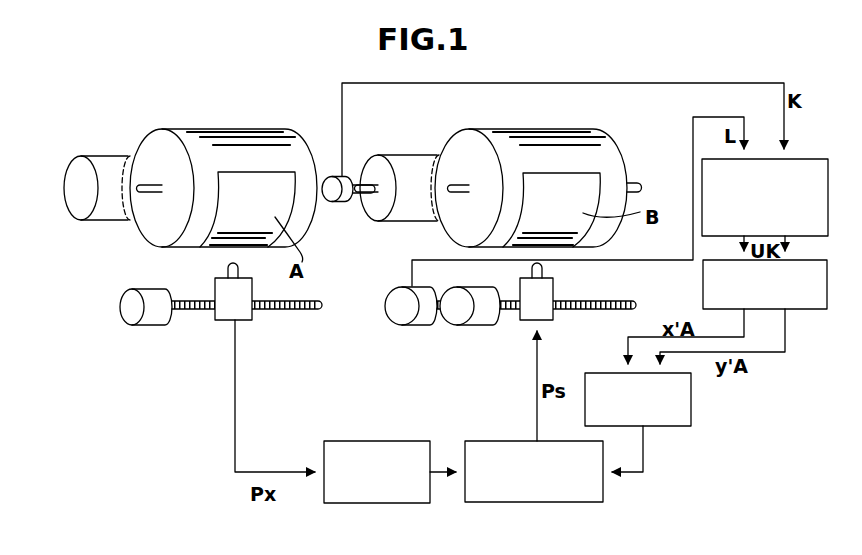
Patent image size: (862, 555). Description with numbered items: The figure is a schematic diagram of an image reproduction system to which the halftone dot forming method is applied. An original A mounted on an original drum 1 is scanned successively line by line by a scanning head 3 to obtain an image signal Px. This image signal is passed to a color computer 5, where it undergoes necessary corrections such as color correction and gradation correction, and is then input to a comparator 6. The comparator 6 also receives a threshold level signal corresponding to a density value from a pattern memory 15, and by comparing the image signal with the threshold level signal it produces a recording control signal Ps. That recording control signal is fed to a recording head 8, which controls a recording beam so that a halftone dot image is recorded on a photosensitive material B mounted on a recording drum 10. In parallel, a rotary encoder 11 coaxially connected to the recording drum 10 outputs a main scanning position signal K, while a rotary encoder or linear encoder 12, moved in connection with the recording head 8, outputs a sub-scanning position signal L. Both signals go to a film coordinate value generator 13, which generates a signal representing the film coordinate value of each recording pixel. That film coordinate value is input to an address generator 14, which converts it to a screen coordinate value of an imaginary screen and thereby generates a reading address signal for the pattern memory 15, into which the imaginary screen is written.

The original drum 1 is at (187, 131).
The scanning head 3 is at (243, 314).
The color computer 5 is at (403, 503).
The comparator 6 is at (575, 503).
The recording head 8 is at (527, 312).
The recording drum 10 is at (611, 152).
The rotary encoder 11 is at (343, 203).
The rotary encoder (or linear encoder) 12 is at (388, 308).
The film coordinate value generator 13 is at (815, 159).
The address generator 14 is at (819, 310).
The pattern memory 15 is at (680, 427).